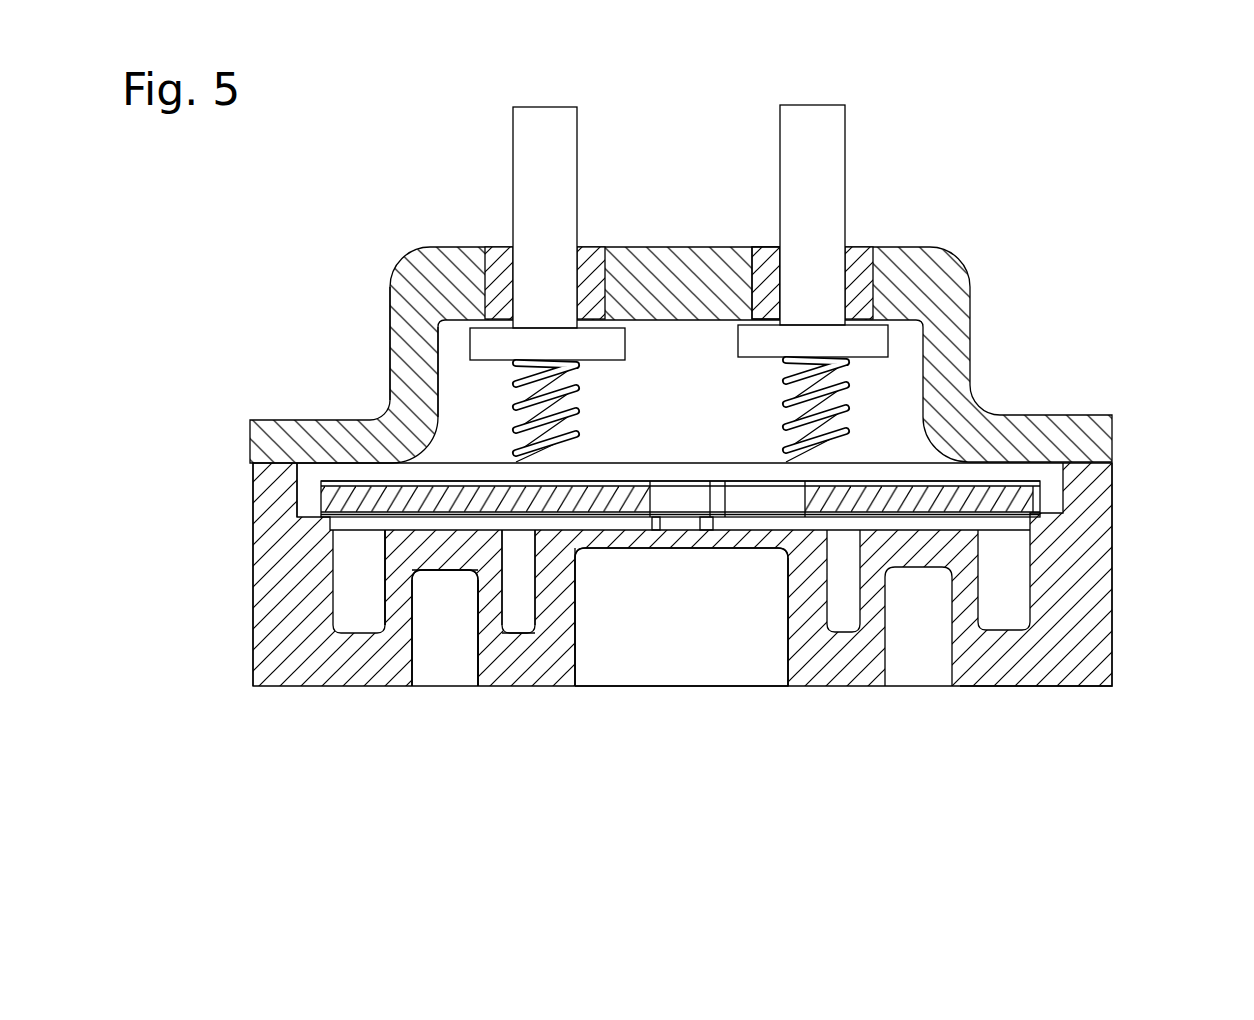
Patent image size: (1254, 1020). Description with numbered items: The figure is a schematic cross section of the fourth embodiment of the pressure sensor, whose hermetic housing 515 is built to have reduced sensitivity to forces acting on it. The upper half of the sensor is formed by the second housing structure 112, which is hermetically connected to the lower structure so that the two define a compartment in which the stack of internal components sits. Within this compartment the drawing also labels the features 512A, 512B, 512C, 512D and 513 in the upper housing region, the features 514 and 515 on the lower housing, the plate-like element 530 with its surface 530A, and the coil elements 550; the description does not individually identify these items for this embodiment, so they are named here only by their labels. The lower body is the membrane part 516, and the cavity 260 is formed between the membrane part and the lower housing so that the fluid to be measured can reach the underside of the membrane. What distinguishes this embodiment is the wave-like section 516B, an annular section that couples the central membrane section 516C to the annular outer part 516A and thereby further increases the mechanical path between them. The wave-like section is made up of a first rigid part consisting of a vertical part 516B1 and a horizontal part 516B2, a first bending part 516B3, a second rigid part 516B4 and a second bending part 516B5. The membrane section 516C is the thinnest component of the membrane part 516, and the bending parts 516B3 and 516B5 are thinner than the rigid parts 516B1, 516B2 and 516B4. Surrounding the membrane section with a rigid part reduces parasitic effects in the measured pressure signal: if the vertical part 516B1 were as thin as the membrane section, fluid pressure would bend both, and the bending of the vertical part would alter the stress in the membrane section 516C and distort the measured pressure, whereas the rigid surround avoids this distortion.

The second housing structure 112 is at (955, 300).
The housing side wall 512A is at (412, 322).
The terminal post 512B is at (535, 137).
The insulating bushing 512C is at (860, 256).
The post opening 512D is at (757, 284).
The connector lead 513 is at (692, 528).
The base lower portion 514 is at (1075, 624).
The hermetic housing 515 is at (1085, 557).
The membrane part 516 is at (253, 625).
The annular outer part 516A is at (272, 558).
The wave-like section 516B is at (425, 693).
The vertical part 516B1 is at (560, 598).
The horizontal part 516B2 is at (520, 663).
The first bending part 516B3 is at (490, 608).
The second rigid part 516B4 is at (455, 555).
The second bending part 516B5 is at (390, 587).
The membrane section 516C is at (722, 540).
The circuit board 530 is at (1042, 491).
The circuit board top surface 530A is at (884, 478).
The spring 550 is at (848, 393).
The cavity 260 is at (760, 660).